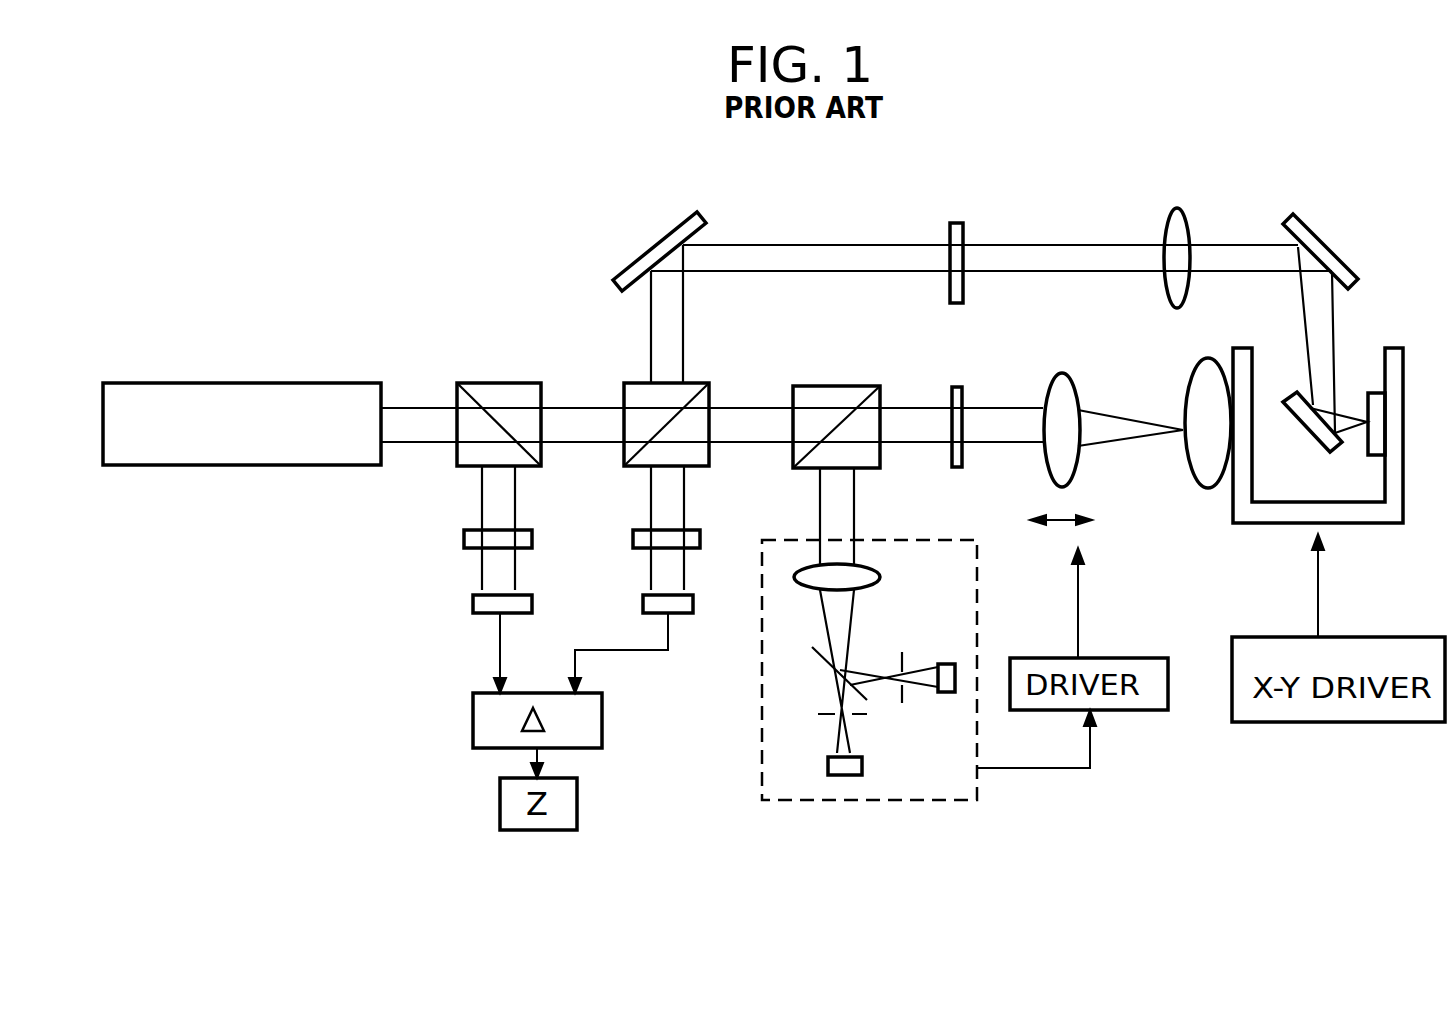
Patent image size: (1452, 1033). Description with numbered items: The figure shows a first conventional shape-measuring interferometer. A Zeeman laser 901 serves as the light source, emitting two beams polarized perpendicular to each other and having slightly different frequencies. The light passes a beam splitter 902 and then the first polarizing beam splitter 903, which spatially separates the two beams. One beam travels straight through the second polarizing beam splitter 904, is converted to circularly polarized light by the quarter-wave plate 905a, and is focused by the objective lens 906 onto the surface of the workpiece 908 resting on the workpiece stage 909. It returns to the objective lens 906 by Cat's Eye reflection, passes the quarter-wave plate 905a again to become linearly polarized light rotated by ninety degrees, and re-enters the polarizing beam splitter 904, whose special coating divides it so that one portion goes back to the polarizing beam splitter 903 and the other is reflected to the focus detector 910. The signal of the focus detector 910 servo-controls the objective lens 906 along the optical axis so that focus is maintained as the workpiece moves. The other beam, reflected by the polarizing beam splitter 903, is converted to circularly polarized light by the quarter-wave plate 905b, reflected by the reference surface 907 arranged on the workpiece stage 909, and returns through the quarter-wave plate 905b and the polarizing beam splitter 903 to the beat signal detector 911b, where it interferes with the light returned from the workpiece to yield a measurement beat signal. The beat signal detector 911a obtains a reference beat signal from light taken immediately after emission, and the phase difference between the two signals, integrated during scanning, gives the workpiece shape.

The Zeeman laser 901 is at (360, 383).
The beam splitter 902 is at (541, 383).
The first polarizing beam splitter 903 is at (727, 375).
The second polarizing beam splitter 904 is at (885, 360).
The λ/4 plate 905a is at (975, 376).
The λ/4 plate 905b is at (964, 228).
The objective lens 906 is at (1070, 382).
The reference surface 907 is at (1376, 393).
The workpiece 908 is at (1192, 468).
The workpiece stage 909 is at (1404, 516).
The focus detector 910 is at (968, 540).
The beat signal detector 911a is at (473, 604).
The beat signal detector 911b is at (645, 604).